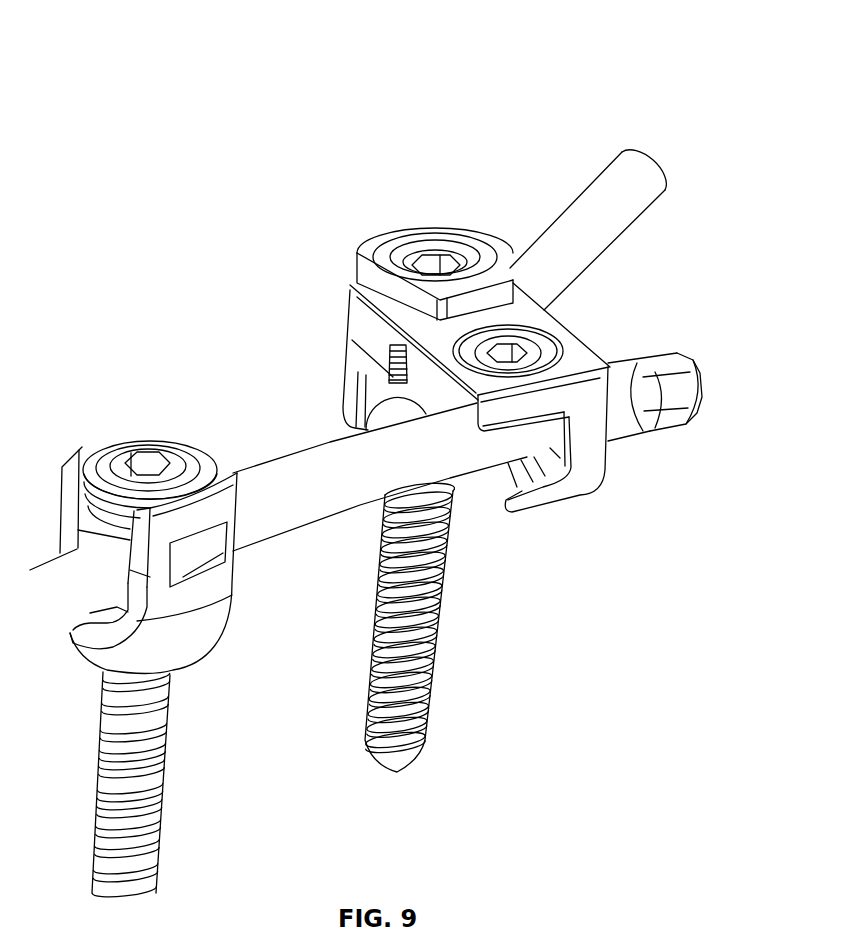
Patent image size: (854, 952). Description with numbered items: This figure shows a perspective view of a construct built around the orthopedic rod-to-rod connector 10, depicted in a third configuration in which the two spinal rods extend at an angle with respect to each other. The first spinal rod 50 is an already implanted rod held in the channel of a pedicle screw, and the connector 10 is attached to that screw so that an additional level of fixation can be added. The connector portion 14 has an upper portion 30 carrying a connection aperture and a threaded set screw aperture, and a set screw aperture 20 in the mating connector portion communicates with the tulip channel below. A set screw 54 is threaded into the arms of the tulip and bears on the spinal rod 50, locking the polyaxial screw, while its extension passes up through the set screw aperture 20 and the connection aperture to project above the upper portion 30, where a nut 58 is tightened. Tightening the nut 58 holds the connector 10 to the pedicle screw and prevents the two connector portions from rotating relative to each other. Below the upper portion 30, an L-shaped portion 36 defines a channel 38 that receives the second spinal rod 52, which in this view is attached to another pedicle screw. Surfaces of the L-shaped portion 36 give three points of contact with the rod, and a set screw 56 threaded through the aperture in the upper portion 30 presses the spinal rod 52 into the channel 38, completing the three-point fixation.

The orthopedic rod-to-rod connector 10 is at (710, 72).
The connector portion 14 is at (522, 362).
The set screw aperture 20 is at (432, 266).
The upper portion 30 is at (523, 413).
The L-shaped portion 36 is at (556, 439).
The channel 38 is at (547, 472).
The first spinal rod 50 is at (635, 210).
The second spinal rod 52 is at (295, 513).
The set screw 54 is at (395, 375).
The set screw 56 is at (506, 355).
The nut 58 is at (435, 274).